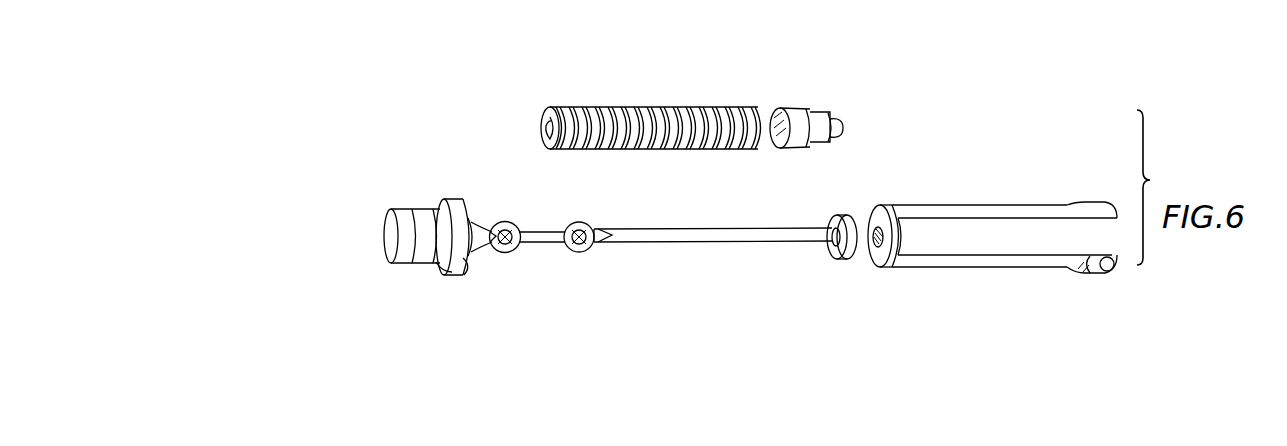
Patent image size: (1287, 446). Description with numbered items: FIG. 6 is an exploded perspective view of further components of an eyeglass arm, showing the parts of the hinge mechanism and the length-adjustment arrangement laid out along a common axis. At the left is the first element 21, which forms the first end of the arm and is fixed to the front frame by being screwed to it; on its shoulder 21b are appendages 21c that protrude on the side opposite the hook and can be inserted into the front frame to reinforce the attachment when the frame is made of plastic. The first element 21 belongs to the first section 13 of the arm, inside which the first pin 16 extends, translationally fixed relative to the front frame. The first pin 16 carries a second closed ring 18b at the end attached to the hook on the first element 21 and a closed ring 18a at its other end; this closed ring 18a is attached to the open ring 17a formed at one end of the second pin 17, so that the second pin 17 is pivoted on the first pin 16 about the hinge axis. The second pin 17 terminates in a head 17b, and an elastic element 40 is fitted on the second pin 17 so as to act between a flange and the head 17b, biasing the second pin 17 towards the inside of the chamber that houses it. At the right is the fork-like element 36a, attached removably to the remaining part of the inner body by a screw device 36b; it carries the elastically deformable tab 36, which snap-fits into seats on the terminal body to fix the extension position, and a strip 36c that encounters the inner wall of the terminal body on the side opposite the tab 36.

The first section 13 is at (493, 249).
The first pin 16 is at (495, 223).
The second pin 17 is at (727, 246).
The open ring 17a is at (588, 222).
The head 17b is at (830, 257).
The closed ring 18a is at (538, 231).
The second closed ring 18b is at (470, 214).
The first element 21 is at (440, 207).
The shoulder 21b is at (452, 198).
The appendages 21c is at (438, 269).
The elastically deformable tab 36 is at (977, 267).
The fork-like element 36a is at (928, 203).
The screw device 36b is at (790, 106).
The strip 36c is at (995, 203).
The elastic element 40 is at (596, 107).